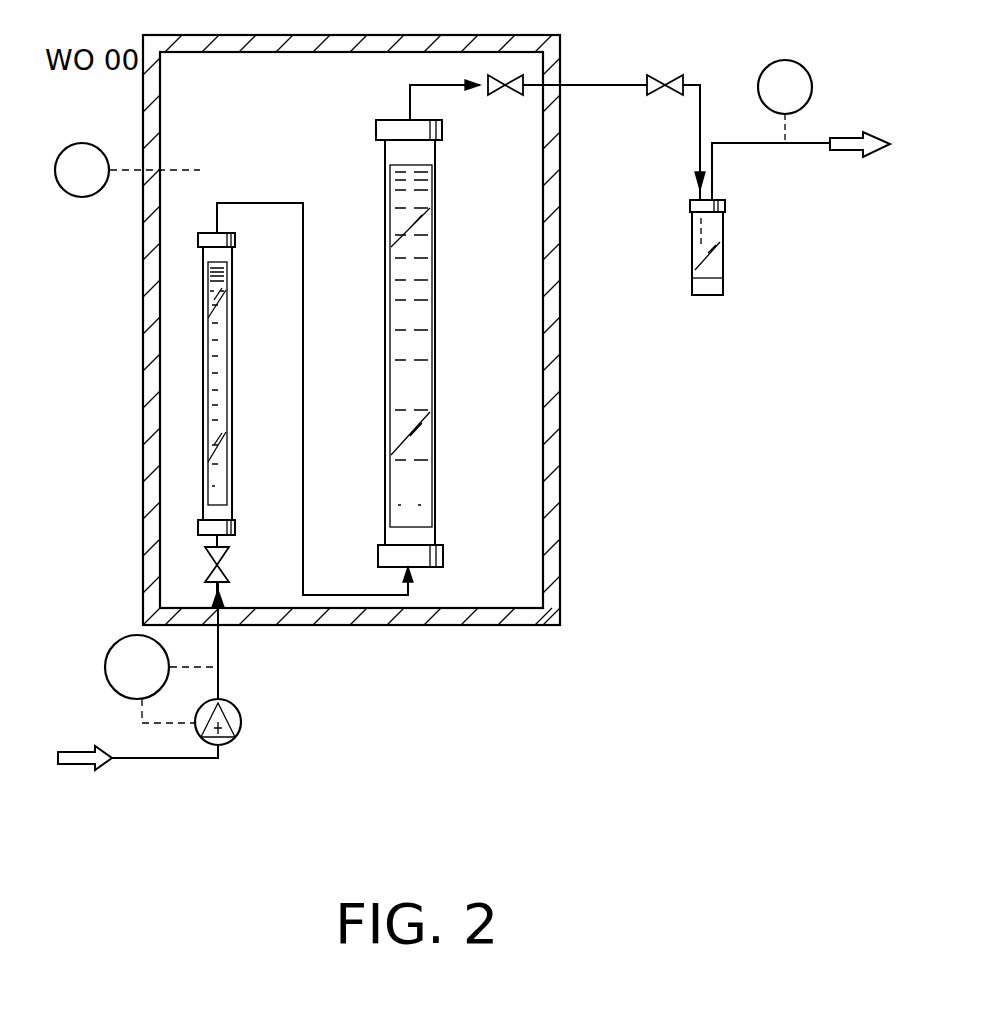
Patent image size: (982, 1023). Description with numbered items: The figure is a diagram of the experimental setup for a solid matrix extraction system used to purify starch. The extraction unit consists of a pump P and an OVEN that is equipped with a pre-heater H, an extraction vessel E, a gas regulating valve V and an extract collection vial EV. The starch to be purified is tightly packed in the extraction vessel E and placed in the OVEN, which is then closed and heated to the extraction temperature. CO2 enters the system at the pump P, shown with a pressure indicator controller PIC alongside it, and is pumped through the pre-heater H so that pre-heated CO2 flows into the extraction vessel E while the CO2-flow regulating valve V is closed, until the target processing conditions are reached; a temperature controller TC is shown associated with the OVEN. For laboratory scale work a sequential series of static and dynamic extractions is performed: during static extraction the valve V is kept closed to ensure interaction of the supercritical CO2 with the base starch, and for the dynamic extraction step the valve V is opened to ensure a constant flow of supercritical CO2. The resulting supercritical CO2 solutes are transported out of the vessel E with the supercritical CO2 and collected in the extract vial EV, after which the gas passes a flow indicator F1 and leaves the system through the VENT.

The oven OVEN is at (263, 102).
The temperature controller TC is at (127, 170).
The pre-heater H is at (295, 399).
The extraction vessel E is at (511, 321).
The gas regulating valve V is at (676, 118).
The extract collection vial EV is at (736, 219).
The flow meter F1 is at (785, 101).
The vent outlet VENT is at (863, 125).
The pressure indicator controller PIC is at (161, 679).
The pump P is at (192, 670).
The element CO2 is at (82, 738).